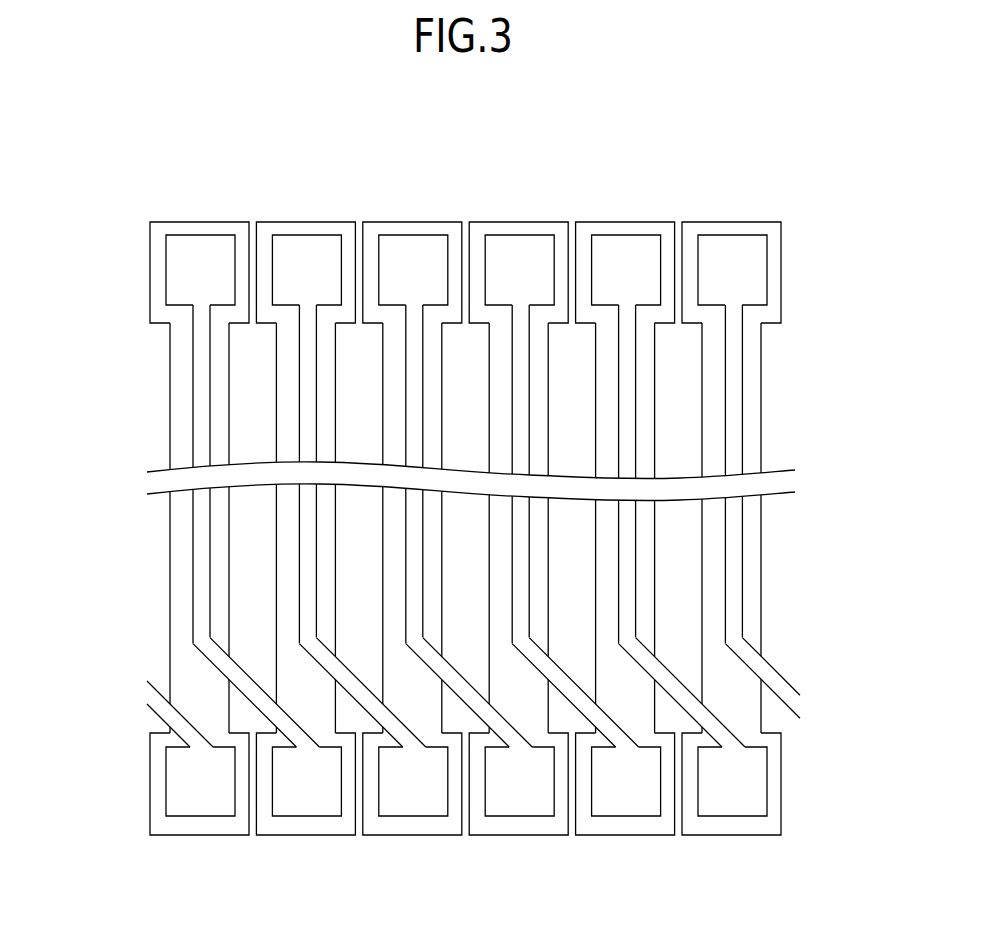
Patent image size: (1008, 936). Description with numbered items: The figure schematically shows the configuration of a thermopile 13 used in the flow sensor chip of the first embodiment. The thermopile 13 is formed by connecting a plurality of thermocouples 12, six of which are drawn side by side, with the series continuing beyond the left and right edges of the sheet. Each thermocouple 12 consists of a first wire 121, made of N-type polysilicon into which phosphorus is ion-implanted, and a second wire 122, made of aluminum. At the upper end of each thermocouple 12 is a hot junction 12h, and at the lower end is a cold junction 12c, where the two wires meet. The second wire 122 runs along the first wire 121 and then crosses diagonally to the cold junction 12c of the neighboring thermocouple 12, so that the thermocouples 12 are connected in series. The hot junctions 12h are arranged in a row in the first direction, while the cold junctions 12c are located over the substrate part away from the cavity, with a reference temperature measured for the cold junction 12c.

The thermopile 13 is at (453, 472).
The thermocouple 12 is at (453, 488).
The hot junction 12h is at (123, 222).
The cold junction 12c is at (123, 735).
The first wire 121 is at (178, 416).
The second wire 122 is at (195, 378).